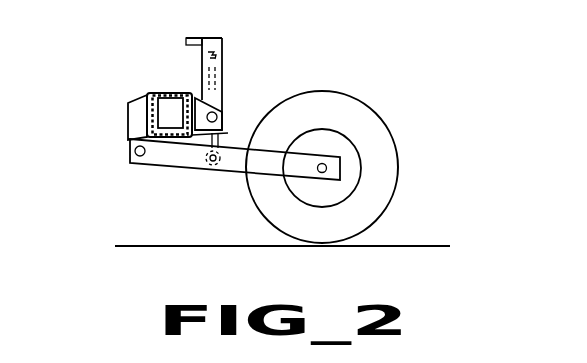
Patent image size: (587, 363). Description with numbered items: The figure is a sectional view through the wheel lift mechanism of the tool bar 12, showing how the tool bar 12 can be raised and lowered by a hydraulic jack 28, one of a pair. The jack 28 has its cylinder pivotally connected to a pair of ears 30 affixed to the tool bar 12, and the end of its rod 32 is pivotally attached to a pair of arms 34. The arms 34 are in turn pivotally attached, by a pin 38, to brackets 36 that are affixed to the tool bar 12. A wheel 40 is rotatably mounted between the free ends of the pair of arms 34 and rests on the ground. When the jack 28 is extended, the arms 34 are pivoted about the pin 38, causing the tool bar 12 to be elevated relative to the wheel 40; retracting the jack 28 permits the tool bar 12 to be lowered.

The tool bar 12 is at (173, 92).
The hydraulic jack 28 is at (220, 37).
The ears 30 is at (208, 112).
The rod 32 is at (200, 146).
The arms 34 is at (237, 173).
The brackets 36 is at (130, 118).
The pin 38 is at (130, 152).
The wheels 40 is at (392, 155).